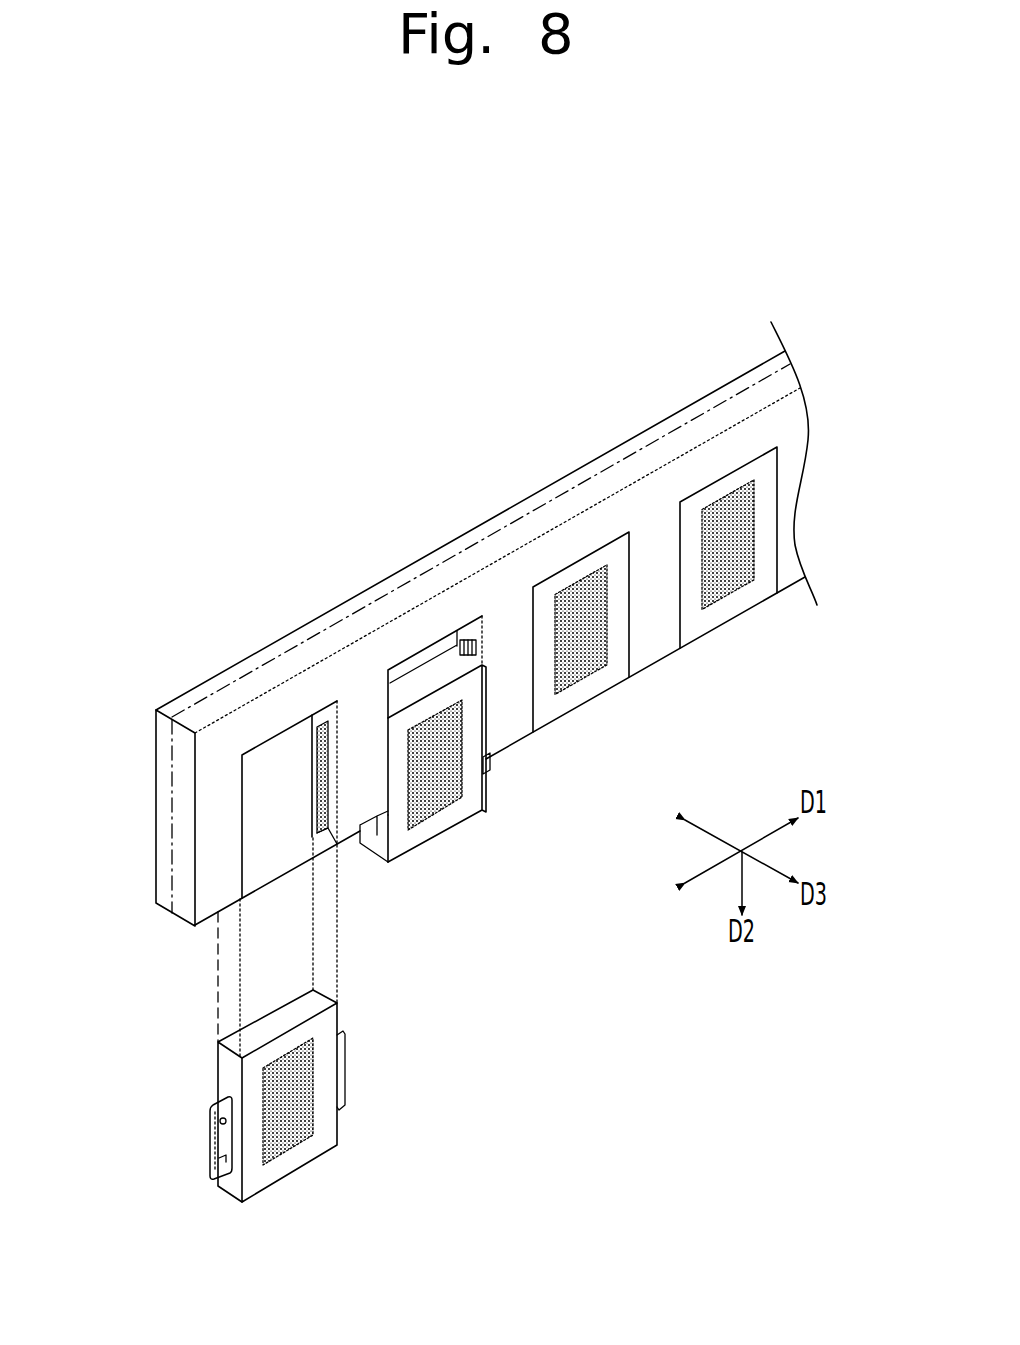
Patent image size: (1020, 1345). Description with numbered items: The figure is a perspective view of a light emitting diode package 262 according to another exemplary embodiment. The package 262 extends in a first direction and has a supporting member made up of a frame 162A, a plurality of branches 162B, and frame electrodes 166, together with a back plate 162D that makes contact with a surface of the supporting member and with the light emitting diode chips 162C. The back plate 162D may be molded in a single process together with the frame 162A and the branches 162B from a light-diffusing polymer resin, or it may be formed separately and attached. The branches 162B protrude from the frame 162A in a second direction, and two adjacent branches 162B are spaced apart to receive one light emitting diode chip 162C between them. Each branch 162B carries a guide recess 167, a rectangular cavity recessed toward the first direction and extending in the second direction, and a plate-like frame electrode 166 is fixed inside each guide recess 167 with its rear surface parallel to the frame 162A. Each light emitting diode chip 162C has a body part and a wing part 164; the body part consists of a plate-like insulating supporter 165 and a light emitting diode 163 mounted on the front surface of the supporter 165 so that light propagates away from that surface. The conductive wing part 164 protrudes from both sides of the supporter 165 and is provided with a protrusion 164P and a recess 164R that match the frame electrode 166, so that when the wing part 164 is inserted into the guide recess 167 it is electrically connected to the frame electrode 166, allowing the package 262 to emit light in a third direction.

The light emitting diode package 262 is at (439, 642).
The frame 162A is at (287, 705).
The branches 162B is at (217, 860).
The light emitting diode chips 162C is at (265, 1134).
The back plate 162D is at (262, 788).
The light emitting diode 163 is at (300, 1107).
The wing part 164 is at (161, 1154).
The protrusion 164P is at (212, 1128).
The recess 164R is at (158, 1161).
The supporter 165 is at (310, 1150).
The frame electrodes 166 is at (318, 797).
The guide recess 167 is at (322, 840).